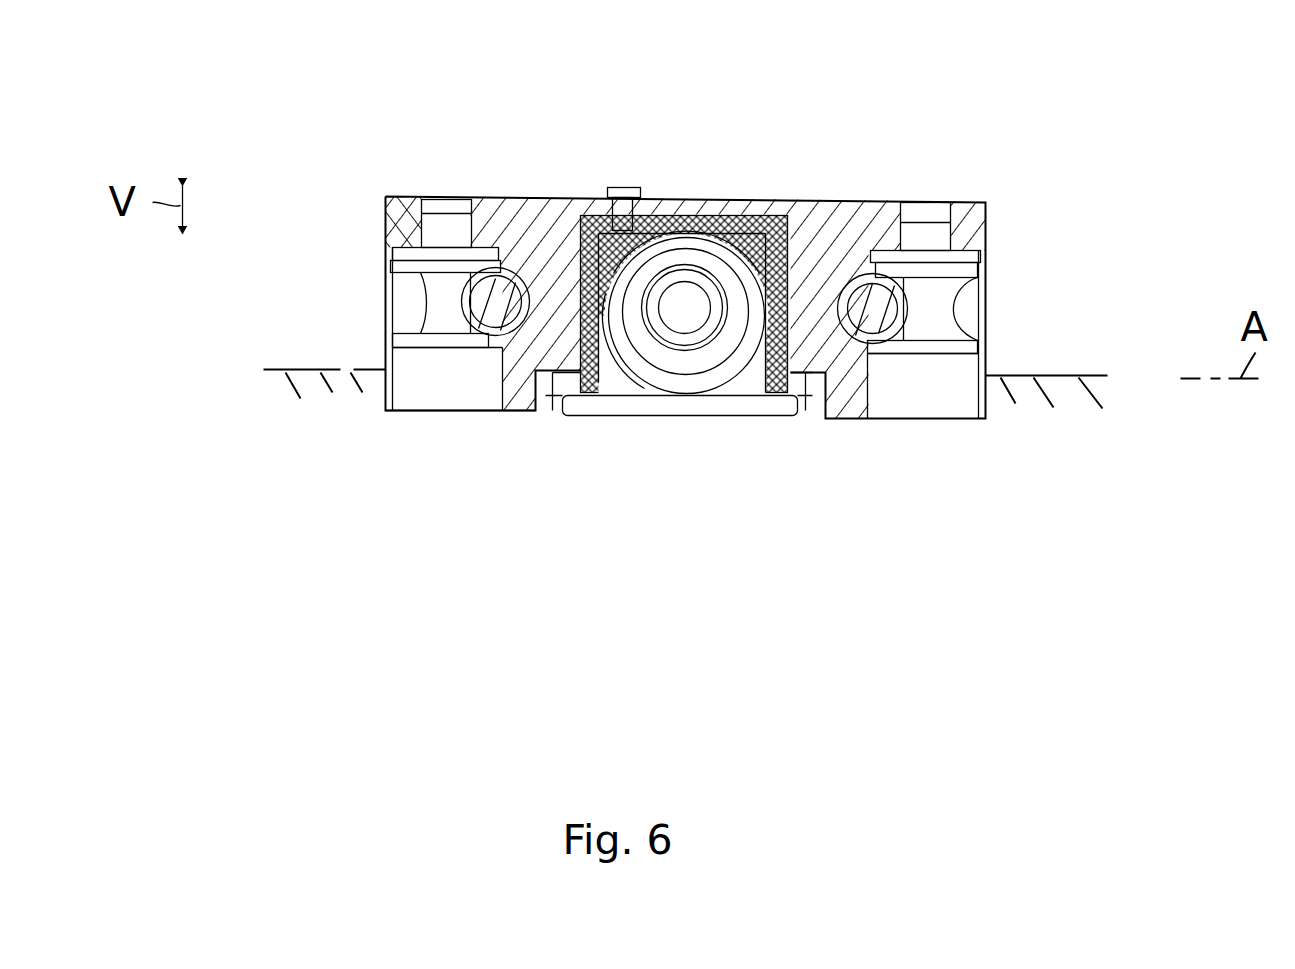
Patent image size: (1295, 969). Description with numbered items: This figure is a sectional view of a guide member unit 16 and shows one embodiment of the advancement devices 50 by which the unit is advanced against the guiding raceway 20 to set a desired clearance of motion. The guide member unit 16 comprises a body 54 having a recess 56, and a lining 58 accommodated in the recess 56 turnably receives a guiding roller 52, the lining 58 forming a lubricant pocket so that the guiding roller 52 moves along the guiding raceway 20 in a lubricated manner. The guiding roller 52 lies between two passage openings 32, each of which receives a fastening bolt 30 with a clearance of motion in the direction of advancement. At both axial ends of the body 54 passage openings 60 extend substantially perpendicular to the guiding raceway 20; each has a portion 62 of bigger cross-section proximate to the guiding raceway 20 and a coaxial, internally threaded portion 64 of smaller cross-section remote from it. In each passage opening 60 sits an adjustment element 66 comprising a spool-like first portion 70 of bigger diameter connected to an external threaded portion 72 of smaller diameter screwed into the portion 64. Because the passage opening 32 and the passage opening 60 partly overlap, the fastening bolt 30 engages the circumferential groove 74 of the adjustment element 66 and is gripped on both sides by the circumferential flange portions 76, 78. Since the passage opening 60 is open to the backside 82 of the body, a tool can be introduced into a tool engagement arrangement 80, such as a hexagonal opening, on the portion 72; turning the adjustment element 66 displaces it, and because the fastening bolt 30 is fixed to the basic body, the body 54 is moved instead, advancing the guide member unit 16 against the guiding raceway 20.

The guide member unit 16 is at (985, 240).
The guiding raceway 20 is at (1068, 378).
The fastening bolt 30 is at (560, 513).
The passage opening 32 is at (525, 197).
The advancement device 50 is at (432, 385).
The guiding roller 52 is at (625, 375).
The body 54 is at (662, 210).
The recess 56 is at (760, 214).
The lining 58 is at (570, 218).
The passage opening 60 is at (385, 241).
The portion 62 is at (383, 262).
The portion 64 is at (428, 199).
The adjustment element 66 is at (483, 235).
The first portion 70 is at (398, 413).
The external threaded portion 72 is at (396, 197).
The circumferential groove 74 is at (425, 308).
The circumferential flange portion 76 is at (387, 270).
The circumferential flange portion 78 is at (385, 348).
The tool engagement arrangement 80 is at (440, 199).
The backside 82 is at (708, 214).